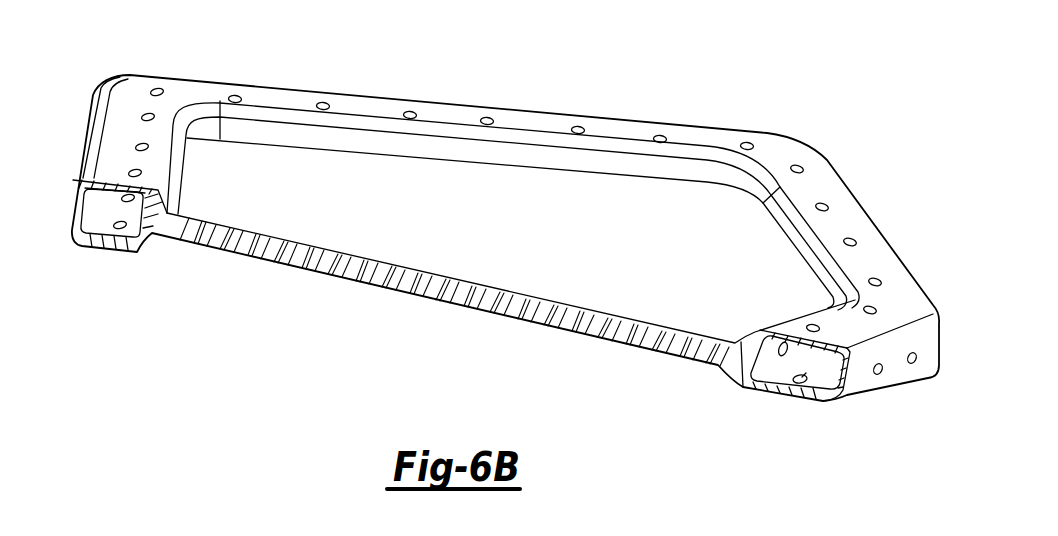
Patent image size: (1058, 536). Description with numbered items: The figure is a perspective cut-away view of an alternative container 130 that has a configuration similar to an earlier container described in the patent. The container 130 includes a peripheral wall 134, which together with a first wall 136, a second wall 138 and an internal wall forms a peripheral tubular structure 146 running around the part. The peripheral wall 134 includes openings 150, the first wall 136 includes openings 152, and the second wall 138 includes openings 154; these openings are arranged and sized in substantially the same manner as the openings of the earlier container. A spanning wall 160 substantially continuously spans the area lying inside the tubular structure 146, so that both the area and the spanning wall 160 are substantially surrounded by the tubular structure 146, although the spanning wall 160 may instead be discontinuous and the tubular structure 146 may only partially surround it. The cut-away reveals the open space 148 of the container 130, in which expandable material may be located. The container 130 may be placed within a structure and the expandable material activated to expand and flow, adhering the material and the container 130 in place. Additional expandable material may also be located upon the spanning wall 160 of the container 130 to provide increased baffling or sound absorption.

The container 130 is at (789, 128).
The peripheral wall 134 is at (928, 330).
The first wall 136 is at (820, 188).
The second wall 138 is at (742, 384).
The peripheral tubular structure 146 is at (98, 262).
The open space 148 is at (113, 212).
The openings 150 is at (910, 364).
The openings 152 is at (485, 119).
The openings 154 is at (810, 377).
The spanning wall 160 is at (511, 238).